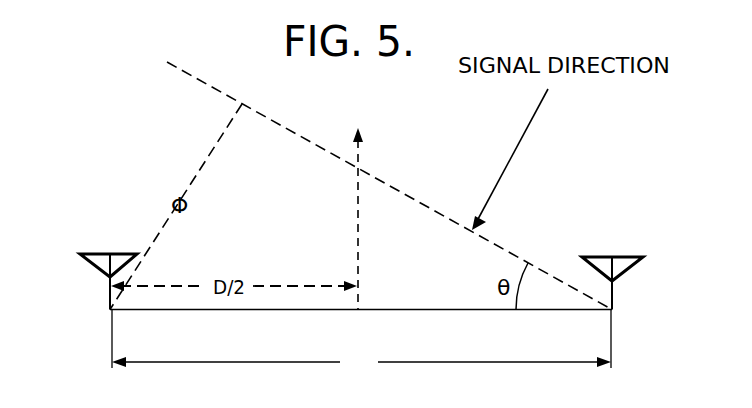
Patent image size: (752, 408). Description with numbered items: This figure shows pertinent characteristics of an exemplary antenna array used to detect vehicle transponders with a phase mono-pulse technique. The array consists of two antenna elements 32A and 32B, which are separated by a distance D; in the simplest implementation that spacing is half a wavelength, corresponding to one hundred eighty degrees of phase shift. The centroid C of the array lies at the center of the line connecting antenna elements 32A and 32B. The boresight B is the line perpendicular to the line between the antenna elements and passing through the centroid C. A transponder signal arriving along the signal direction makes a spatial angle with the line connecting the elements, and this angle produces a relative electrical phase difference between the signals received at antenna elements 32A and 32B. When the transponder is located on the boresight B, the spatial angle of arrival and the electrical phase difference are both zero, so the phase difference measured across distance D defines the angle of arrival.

The antenna element 32A is at (92, 252).
The antenna element 32B is at (623, 257).
The boresight B is at (359, 219).
The centroid C is at (372, 317).
The distance D is at (361, 342).